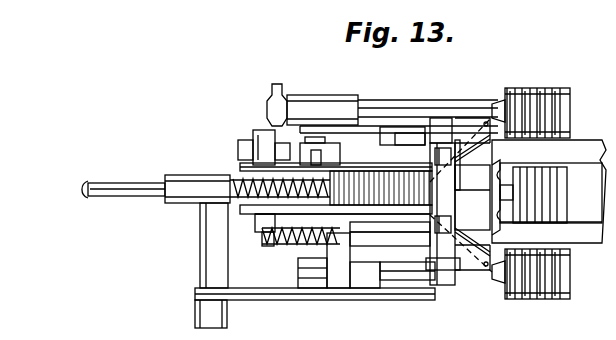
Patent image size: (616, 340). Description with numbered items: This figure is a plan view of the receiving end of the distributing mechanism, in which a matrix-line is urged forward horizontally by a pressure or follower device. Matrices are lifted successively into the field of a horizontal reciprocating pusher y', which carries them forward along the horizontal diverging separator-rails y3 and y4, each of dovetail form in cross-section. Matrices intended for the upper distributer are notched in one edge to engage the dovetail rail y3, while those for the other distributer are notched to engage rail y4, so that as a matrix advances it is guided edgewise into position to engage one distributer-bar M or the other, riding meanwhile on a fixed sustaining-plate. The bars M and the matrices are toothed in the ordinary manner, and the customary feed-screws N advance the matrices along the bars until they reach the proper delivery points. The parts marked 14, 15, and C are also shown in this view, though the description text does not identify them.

The shaft / rod 14 is at (163, 203).
The bracket centerline post 15 is at (440, 322).
The horizontal reciprocating pusher y' is at (461, 199).
The separator-rail y3 is at (459, 147).
The separator-rail y4 is at (458, 231).
The central plate C is at (455, 176).
The feed-screws N is at (567, 172).
The distributer-bars M is at (576, 203).